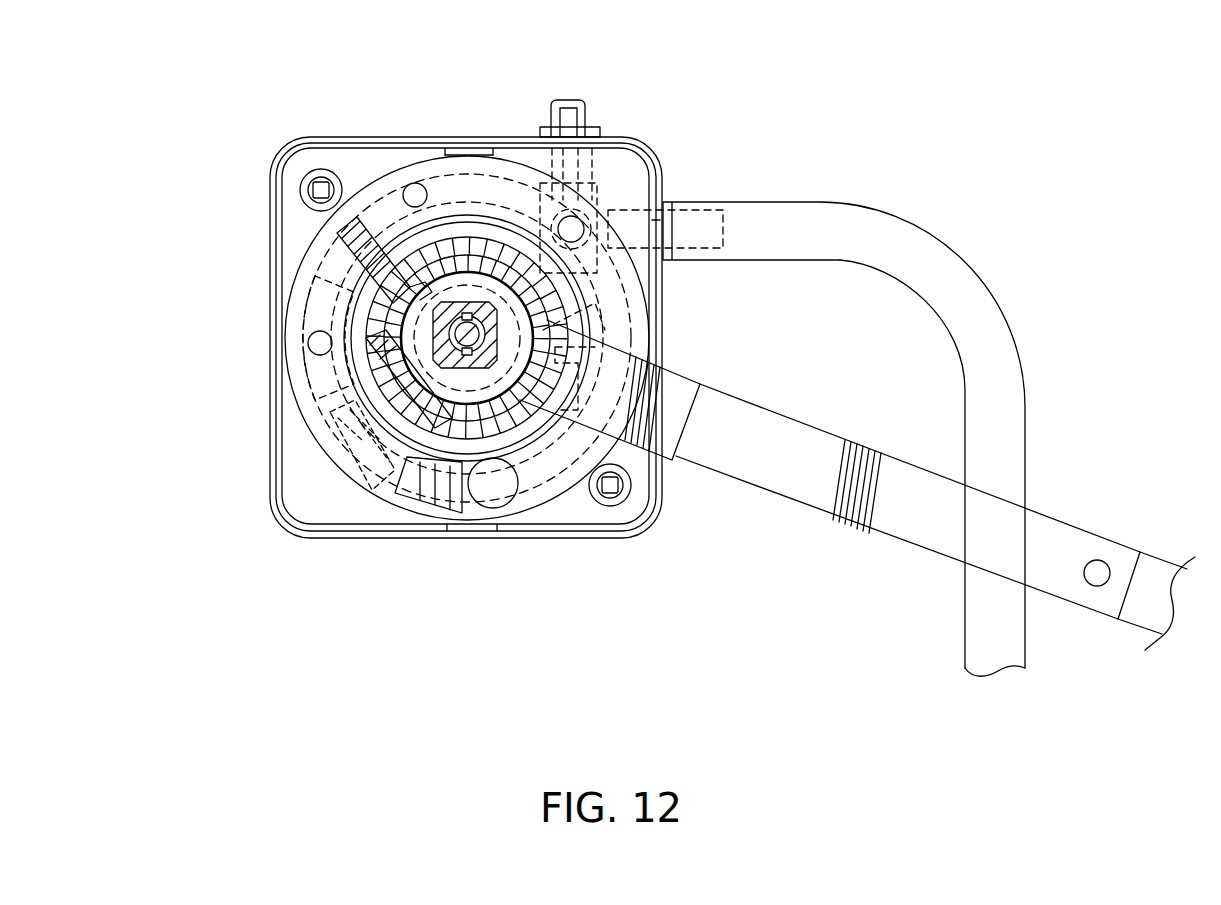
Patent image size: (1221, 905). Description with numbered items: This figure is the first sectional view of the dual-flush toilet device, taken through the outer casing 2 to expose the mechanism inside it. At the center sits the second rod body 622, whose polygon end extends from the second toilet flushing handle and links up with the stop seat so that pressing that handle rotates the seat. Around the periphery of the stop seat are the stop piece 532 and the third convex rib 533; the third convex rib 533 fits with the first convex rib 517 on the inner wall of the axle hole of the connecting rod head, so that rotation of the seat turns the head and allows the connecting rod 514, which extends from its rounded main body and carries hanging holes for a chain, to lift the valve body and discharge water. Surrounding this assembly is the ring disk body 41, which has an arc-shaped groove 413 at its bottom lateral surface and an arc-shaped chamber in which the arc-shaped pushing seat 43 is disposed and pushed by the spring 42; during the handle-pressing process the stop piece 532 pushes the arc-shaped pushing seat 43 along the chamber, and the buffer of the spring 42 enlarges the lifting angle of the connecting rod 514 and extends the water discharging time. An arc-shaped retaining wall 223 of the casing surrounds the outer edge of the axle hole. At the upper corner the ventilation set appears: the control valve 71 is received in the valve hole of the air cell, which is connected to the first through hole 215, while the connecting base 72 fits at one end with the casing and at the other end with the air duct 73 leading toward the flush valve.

The outer casing 2 is at (393, 135).
The ring disk body 41 is at (372, 182).
The arc-shaped groove 413 is at (490, 185).
The spring 42 is at (398, 470).
The arc-shaped pushing seat 43 is at (330, 393).
The control valve 71 is at (590, 106).
The connecting base 72 is at (668, 200).
The air duct 73 is at (917, 216).
The first through hole 215 is at (573, 223).
The arc-shaped retaining wall 223 is at (372, 363).
The connecting rod 514 is at (850, 522).
The first convex rib 517 is at (650, 350).
The stop piece 532 is at (413, 317).
The third convex rib 533 is at (615, 302).
The second rod body 622 is at (479, 367).